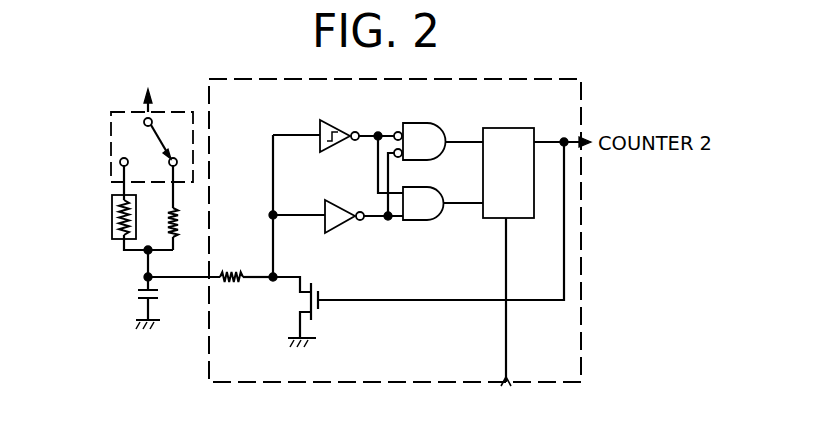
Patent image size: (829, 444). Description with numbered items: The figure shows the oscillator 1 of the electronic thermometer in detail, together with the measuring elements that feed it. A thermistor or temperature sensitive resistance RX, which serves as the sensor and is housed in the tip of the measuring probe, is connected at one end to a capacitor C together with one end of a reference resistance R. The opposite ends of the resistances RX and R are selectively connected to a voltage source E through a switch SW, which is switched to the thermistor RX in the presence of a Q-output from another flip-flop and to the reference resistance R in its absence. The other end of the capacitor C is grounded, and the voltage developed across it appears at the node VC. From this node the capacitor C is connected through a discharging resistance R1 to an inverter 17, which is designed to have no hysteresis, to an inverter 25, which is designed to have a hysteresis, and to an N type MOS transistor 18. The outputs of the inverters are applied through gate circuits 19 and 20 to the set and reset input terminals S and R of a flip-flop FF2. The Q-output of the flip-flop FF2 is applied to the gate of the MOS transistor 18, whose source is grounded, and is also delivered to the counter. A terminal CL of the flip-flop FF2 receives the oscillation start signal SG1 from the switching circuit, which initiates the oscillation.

The oscillator 1 is at (515, 79).
The voltage source E is at (148, 85).
The switch SW is at (110, 136).
The thermistor (temperature sensitive resistance) RX is at (111, 211).
The reference resistance R is at (181, 213).
The control voltage node VC is at (133, 263).
The capacitor C is at (133, 297).
The discharging resistance R1 is at (233, 282).
The inverter with hysteresis 25 is at (336, 132).
The inverter 17 is at (349, 231).
The gate circuit 19 is at (431, 124).
The gate circuit 20 is at (438, 224).
The flip-flop FF2 is at (518, 128).
The N type MOS transistor 18 is at (321, 318).
The oscillation start signal SG1 is at (508, 317).